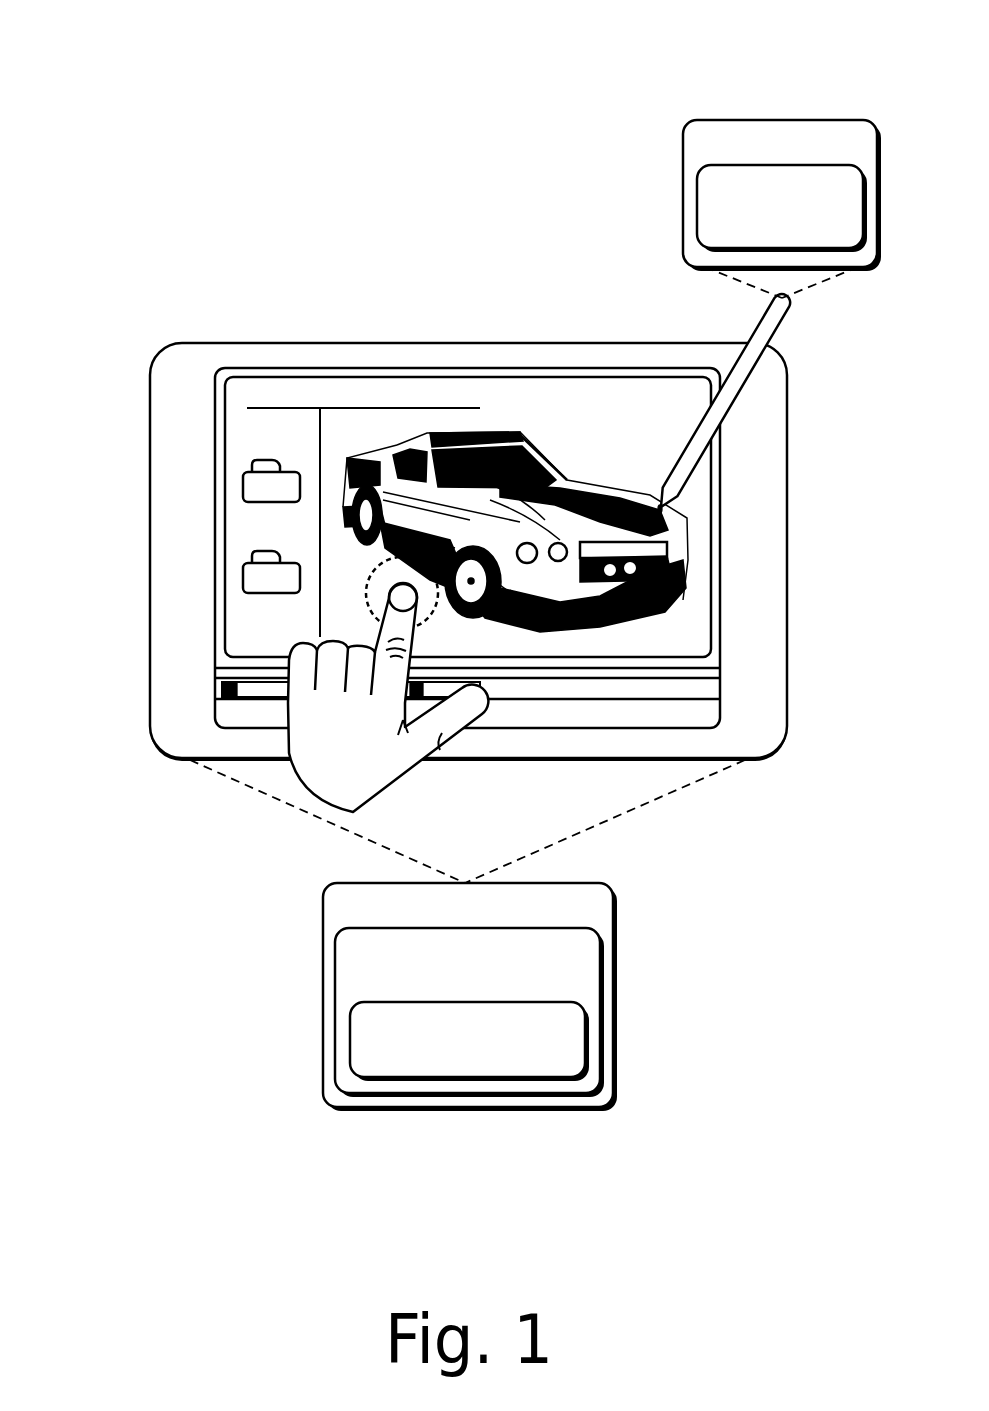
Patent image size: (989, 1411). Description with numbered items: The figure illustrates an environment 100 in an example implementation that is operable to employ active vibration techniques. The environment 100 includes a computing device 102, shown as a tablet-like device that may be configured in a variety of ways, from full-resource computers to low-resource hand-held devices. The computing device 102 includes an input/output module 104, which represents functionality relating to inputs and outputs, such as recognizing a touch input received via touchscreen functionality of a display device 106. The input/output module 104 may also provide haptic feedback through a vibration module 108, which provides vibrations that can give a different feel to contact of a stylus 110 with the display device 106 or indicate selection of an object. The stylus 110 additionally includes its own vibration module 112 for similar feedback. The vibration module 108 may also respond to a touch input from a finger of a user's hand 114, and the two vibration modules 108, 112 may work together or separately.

The environment 100 is at (147, 59).
The computing device 102 is at (468, 727).
The input/output module 104 is at (530, 992).
The display device 106 is at (692, 407).
The vibration module 108 is at (530, 1064).
The stylus 110 is at (837, 156).
The vibration module 112 is at (843, 232).
The user's hand 114 is at (363, 752).